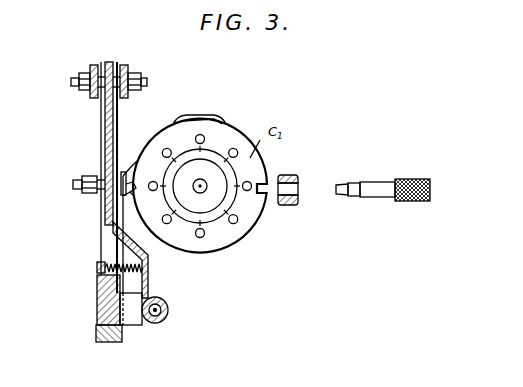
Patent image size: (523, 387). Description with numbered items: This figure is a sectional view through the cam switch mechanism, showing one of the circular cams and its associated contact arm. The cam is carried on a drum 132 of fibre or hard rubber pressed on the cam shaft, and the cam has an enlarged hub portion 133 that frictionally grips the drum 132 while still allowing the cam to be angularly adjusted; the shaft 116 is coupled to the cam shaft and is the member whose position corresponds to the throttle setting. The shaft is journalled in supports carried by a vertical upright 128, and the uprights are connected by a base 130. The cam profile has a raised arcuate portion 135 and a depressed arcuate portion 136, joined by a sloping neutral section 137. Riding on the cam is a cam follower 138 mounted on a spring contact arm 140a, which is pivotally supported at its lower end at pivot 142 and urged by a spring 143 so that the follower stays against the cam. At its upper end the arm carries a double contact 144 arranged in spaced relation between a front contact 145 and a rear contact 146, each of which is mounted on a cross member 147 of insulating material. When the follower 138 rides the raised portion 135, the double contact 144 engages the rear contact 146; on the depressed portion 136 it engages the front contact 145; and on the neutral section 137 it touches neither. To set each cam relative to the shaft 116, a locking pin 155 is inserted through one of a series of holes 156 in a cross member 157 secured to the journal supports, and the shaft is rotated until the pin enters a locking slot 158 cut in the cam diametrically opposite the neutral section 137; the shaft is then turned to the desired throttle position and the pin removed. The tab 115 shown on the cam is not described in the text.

The tab 115 is at (199, 110).
The shaft 116 is at (203, 188).
The vertical upright 128 is at (105, 237).
The base 130 is at (108, 342).
The drum 132 is at (222, 191).
The enlarged hub portion 133 is at (220, 213).
The raised arcuate portion 135 is at (200, 190).
The depressed arcuate portion 136 is at (147, 158).
The sloping neutral section 137 is at (140, 183).
The cam follower 138 is at (133, 194).
The spring contact arm 140a is at (103, 137).
The pivot 142 is at (168, 310).
The spring 143 is at (103, 267).
The double contact 144 is at (113, 64).
The front contact 145 is at (140, 82).
The rear contact 146 is at (82, 85).
The cross member 147 is at (95, 98).
The locking pin 155 is at (378, 185).
The hole 156 is at (282, 180).
The cross member 157 is at (297, 182).
The locking slot 158 is at (265, 202).